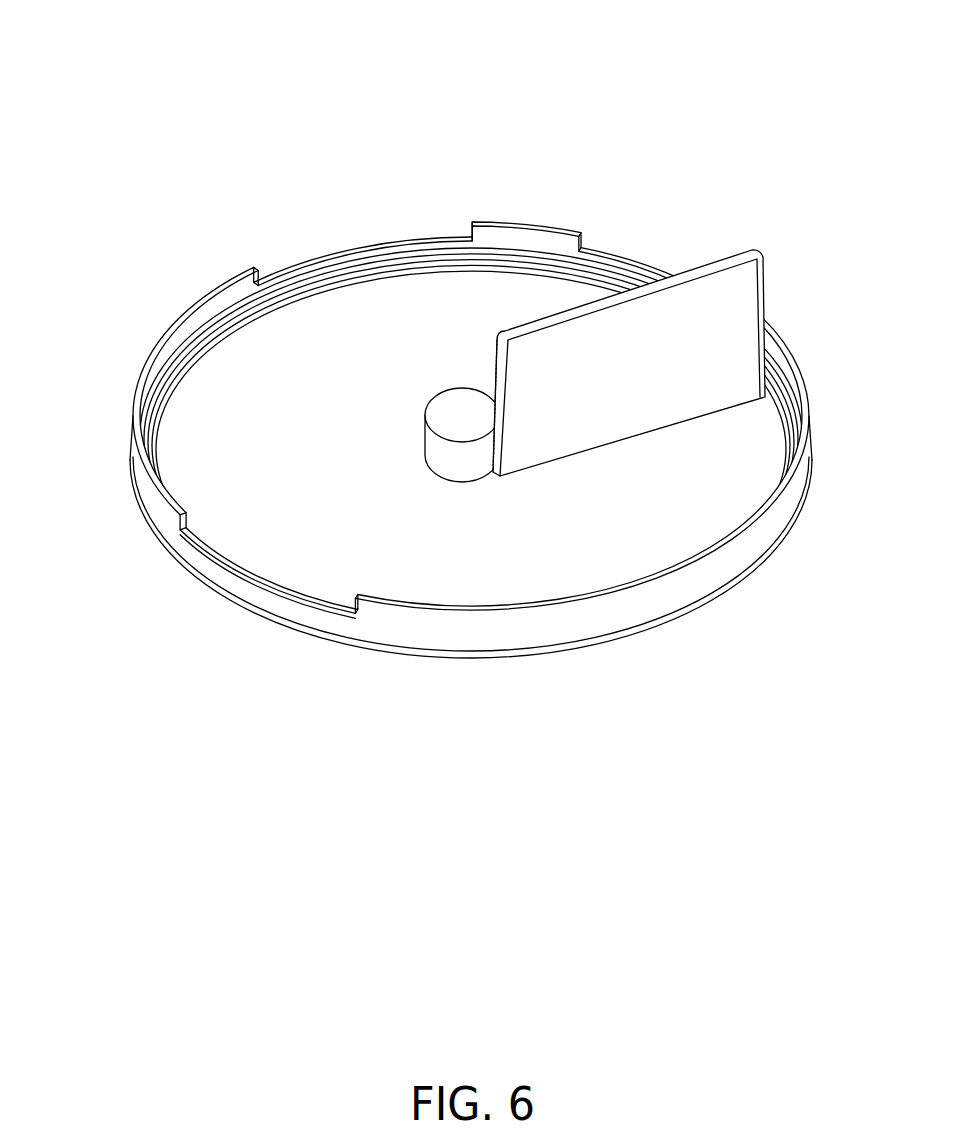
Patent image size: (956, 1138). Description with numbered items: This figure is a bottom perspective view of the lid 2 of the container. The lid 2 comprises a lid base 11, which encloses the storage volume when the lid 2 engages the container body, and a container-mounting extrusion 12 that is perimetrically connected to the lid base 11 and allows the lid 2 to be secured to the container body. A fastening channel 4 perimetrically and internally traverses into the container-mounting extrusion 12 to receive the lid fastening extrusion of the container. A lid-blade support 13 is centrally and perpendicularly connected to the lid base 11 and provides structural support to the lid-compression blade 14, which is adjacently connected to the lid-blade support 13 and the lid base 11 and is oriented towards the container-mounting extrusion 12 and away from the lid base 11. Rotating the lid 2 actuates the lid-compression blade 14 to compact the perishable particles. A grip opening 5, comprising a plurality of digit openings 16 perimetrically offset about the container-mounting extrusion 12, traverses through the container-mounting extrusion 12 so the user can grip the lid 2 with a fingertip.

The lid 2 is at (436, 342).
The fastening channel 4 is at (177, 356).
The grip opening 5 is at (427, 411).
The lid base 11 is at (552, 568).
The container-mounting extrusion 12 is at (157, 499).
The lid-blade support 13 is at (453, 455).
The lid-compression blade 14 is at (752, 288).
The digit openings 16 is at (280, 262).